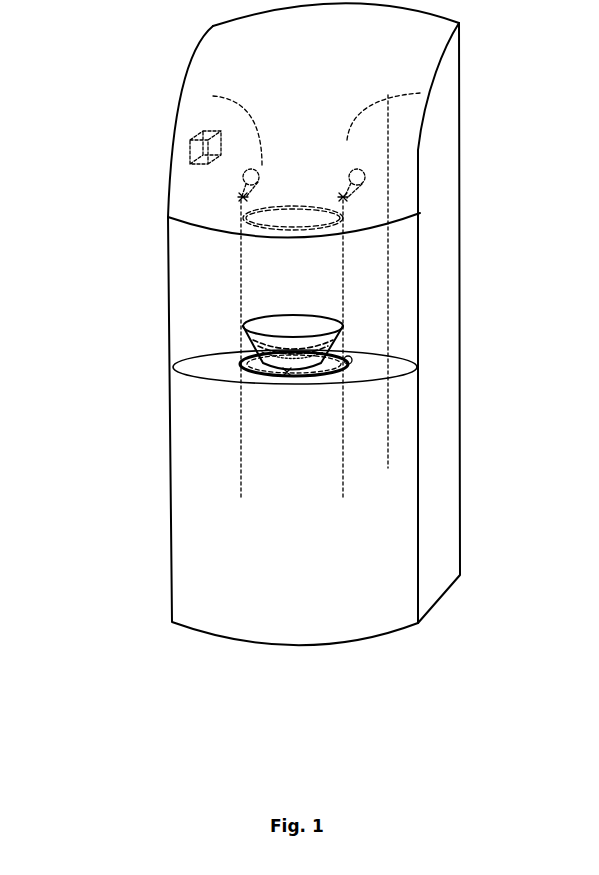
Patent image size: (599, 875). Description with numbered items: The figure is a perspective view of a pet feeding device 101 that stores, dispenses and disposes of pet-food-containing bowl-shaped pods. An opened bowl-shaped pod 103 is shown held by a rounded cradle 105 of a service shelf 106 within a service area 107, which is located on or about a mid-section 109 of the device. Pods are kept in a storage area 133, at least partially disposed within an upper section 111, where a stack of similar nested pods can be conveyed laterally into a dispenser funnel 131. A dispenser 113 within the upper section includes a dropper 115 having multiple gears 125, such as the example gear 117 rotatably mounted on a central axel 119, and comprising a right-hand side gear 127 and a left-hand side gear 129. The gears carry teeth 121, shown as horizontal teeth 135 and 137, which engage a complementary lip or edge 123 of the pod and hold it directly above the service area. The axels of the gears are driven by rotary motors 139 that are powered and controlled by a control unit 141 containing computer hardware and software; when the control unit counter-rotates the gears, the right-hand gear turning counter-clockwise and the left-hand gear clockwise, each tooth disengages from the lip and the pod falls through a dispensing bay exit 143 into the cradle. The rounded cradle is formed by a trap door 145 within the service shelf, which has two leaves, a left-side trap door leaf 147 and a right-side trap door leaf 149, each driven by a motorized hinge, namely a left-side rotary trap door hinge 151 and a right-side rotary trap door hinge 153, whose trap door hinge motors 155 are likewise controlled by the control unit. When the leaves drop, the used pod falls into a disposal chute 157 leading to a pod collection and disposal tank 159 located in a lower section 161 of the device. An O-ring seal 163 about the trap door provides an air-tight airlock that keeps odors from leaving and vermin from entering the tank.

The pet feeding device 101 is at (118, 682).
The bowl-shaped pod 103 is at (265, 340).
The rounded cradle 105 is at (333, 382).
The service shelf 106 is at (238, 370).
The service area 107 is at (383, 323).
The mid-section 109 is at (136, 308).
The upper section 111 is at (148, 124).
The dispenser 113 is at (362, 213).
The dropper 115 is at (388, 178).
The gear 117 is at (342, 192).
The central axel 119 is at (343, 200).
The teeth 121 is at (241, 195).
The complementary lip or edge 123 is at (245, 330).
The gears 125 is at (334, 197).
The right-hand side gear 127 is at (346, 197).
The left-hand side gear 129 is at (240, 197).
The dispenser funnel 131 is at (277, 158).
The storage area 133 is at (438, 143).
The horizontal teeth 135 is at (250, 196).
The horizontal teeth 137 is at (341, 196).
The rotary motors 139 is at (240, 186).
The control unit 141 is at (205, 142).
The dispensing bay exit 143 is at (292, 250).
The trap door 145 is at (287, 386).
The left-side trap door leaf 147 is at (267, 375).
The right-side trap door leaf 149 is at (305, 378).
The left-side rotary trap door hinge 151 is at (233, 377).
The right-side rotary trap door hinge 153 is at (352, 377).
The trap door hinge motors 155 is at (255, 357).
The disposal chute 157 is at (240, 475).
The pod collection and disposal tank 159 is at (318, 565).
The lower section 161 is at (136, 573).
The O-ring seal 163 is at (261, 462).